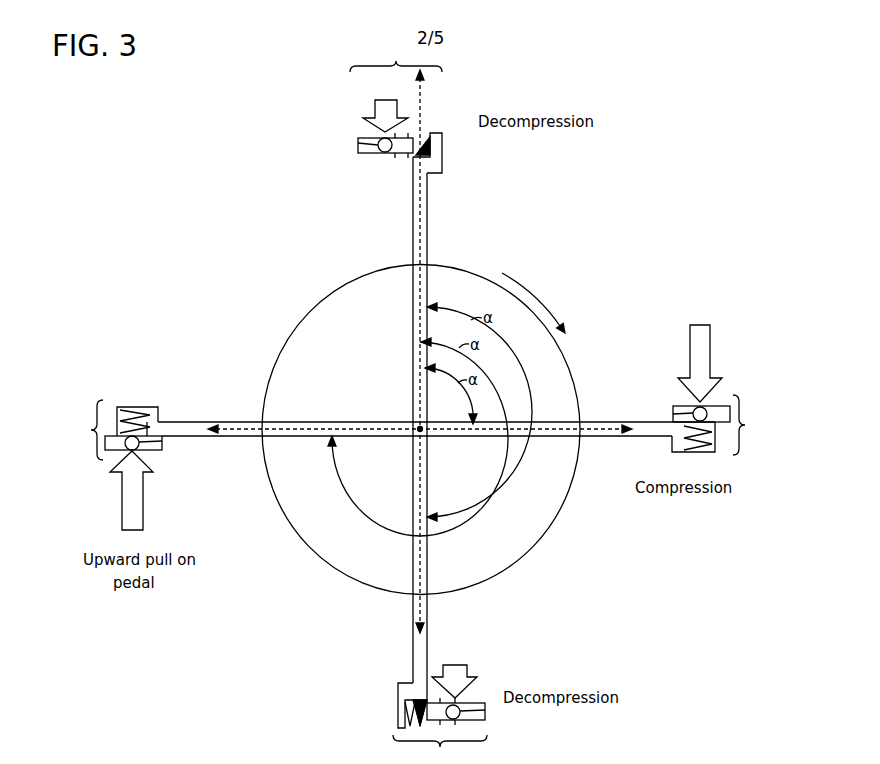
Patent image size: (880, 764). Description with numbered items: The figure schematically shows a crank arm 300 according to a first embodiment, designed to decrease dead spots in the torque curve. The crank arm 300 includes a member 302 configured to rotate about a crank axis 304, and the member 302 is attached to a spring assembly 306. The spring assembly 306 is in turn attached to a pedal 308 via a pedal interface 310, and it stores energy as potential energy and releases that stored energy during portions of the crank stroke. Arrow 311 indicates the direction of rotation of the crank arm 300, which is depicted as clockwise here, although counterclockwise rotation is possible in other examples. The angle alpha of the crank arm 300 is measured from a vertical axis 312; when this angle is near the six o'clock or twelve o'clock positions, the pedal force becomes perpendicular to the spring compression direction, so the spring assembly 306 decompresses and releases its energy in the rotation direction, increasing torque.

The crank arm 300 is at (421, 402).
The member 302 is at (428, 191).
The crank axis 304 is at (418, 433).
The spring assembly 306 is at (428, 140).
The pedal 308 is at (368, 155).
The pedal interface 310 is at (358, 144).
The arrow indicating direction of rotation 311 is at (537, 300).
The vertical axis 312 is at (423, 97).